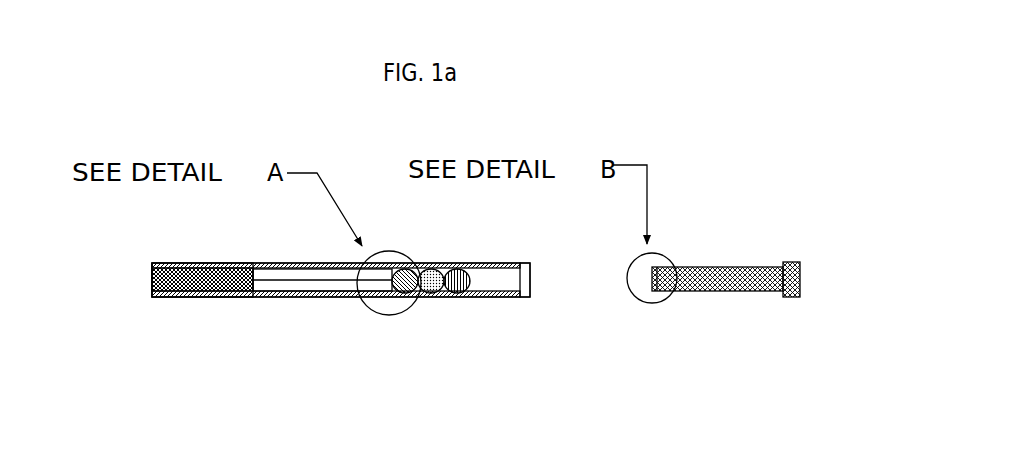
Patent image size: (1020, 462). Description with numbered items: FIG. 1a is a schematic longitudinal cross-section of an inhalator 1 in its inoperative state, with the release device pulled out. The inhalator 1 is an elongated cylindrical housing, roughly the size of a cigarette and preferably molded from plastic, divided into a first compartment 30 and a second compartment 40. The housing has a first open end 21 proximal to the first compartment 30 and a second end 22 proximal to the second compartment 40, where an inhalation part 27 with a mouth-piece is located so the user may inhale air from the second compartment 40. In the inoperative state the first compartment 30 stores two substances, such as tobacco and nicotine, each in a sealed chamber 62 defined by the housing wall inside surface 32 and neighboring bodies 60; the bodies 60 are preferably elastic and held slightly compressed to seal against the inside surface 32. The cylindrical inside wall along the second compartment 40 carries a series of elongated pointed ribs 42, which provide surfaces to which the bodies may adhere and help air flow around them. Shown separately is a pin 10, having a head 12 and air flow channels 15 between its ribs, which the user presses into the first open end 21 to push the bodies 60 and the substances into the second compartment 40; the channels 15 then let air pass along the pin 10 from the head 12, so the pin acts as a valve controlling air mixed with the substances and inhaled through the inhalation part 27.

The inhalator 1 is at (265, 238).
The pin 10 is at (745, 258).
The head 12 is at (793, 288).
The air flow channels 15 is at (723, 290).
The first open end 21 is at (531, 272).
The second end 22 is at (152, 278).
The inhalation part 27 is at (173, 282).
The first compartment 30 is at (503, 282).
The housing wall inside surface 32 is at (510, 264).
The second compartment 40 is at (273, 283).
The elongated pointed ribs 42 is at (342, 297).
The bodies 60 is at (405, 270).
The sealed chamber 62 is at (436, 288).